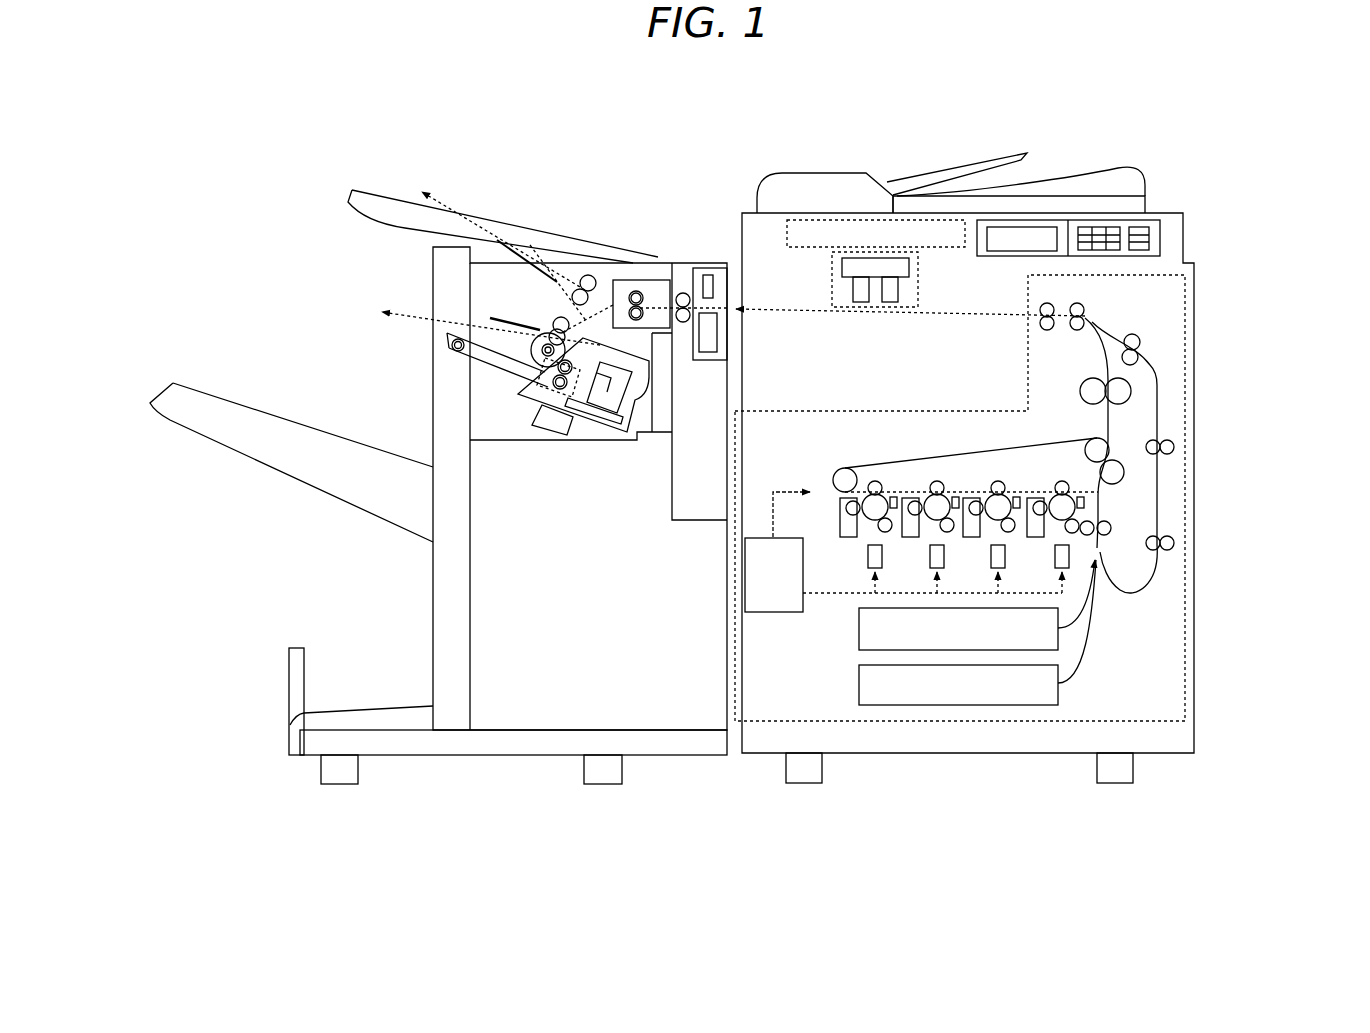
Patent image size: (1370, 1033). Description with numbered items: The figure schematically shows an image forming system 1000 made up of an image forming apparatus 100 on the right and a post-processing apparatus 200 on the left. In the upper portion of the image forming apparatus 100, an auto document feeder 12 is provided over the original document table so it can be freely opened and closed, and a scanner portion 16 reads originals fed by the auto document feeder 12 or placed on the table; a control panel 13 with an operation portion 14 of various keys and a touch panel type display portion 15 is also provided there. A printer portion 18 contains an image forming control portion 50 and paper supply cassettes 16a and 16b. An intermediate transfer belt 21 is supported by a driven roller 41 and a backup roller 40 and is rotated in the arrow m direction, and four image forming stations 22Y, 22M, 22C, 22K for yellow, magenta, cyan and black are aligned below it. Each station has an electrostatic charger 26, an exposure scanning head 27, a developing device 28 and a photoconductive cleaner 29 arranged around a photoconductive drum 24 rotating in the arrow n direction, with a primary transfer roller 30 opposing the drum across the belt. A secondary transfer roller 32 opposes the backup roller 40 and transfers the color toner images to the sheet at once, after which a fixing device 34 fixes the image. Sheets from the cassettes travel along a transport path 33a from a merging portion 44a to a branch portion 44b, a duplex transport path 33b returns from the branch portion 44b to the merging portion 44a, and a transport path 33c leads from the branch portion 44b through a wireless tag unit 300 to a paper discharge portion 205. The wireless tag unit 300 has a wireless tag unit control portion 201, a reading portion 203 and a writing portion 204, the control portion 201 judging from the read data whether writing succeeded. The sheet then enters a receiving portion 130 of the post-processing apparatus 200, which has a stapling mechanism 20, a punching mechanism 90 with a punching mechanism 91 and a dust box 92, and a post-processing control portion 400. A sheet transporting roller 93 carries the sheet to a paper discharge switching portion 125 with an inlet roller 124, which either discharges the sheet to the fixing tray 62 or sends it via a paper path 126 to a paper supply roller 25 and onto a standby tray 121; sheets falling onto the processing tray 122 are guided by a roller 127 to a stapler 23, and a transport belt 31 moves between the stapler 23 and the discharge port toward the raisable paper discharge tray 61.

The image forming system 1000 is at (345, 113).
The image forming apparatus 100 is at (976, 123).
The post-processing apparatus 200 is at (572, 197).
The post-processing control portion 400 is at (663, 441).
The wireless tag unit 300 is at (919, 262).
The wireless tag unit control portion 201 is at (841, 268).
The reading portion 203 is at (852, 290).
The writing portion 204 is at (899, 290).
The paper discharge portion 205 is at (736, 312).
The receiving portion 130 is at (735, 300).
The auto document feeder (ADF) 12 is at (830, 188).
The scanner portion 16 is at (920, 195).
The display portion 15 is at (1043, 240).
The operation portion 14 is at (1122, 238).
The control panel 13 is at (1162, 244).
The printer portion 18 is at (917, 410).
The transport path 33c is at (968, 317).
The branch portion 44b is at (1085, 319).
The transport path 33b is at (1108, 336).
The fixing device 34 is at (1096, 376).
The transport path 33a is at (1107, 430).
The backup roller 40 is at (1085, 452).
The secondary transfer roller 32 is at (1112, 485).
The driven roller 41 is at (844, 467).
The intermediate transfer belt 21 is at (1025, 446).
The arrow m direction m is at (907, 449).
The arrow n direction n is at (848, 503).
The primary transfer roller 30 is at (875, 480).
The developing device 28 is at (839, 524).
The photoconductive drum 24 is at (864, 516).
The photoconductive cleaner 29 is at (893, 500).
The electrostatic charger 26 is at (893, 532).
The exposure scanning head 27 is at (866, 556).
The image forming station 22Y is at (887, 539).
The image forming station 22M is at (949, 539).
The image forming station 22C is at (1011, 539).
The image forming station 22K is at (1080, 541).
The image forming control portion 50 is at (768, 613).
The paper supply cassette 16a is at (858, 628).
The paper supply cassette 16b is at (858, 683).
The merging portion 44a is at (1098, 586).
The fixing tray 62 is at (393, 198).
The paper discharge tray 61 is at (258, 410).
The punching mechanism 90 is at (697, 212).
The punching mechanism 91 is at (708, 274).
The dust box 92 is at (710, 353).
The sheet transporting roller 93 is at (683, 292).
The paper discharge switching portion 125 is at (648, 279).
The inlet roller 124 is at (634, 289).
The processing tray 122 is at (478, 322).
The standby tray 121 is at (499, 317).
The paper path 126 is at (565, 313).
The paper supply roller 25 is at (556, 325).
The transport belt 31 is at (490, 374).
The roller 127 is at (552, 385).
The stapler 23 is at (606, 418).
The stapling mechanism 20 is at (577, 434).